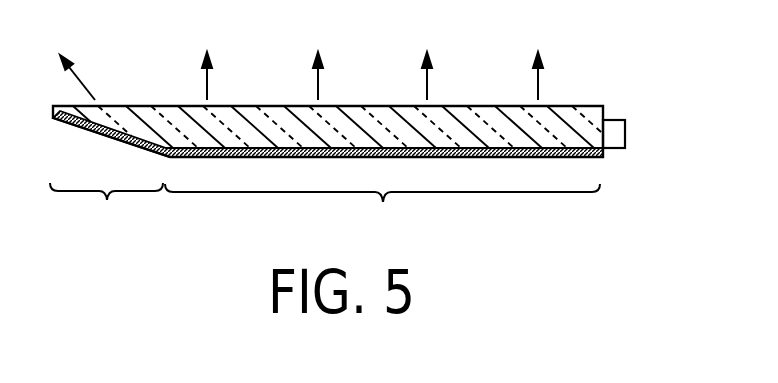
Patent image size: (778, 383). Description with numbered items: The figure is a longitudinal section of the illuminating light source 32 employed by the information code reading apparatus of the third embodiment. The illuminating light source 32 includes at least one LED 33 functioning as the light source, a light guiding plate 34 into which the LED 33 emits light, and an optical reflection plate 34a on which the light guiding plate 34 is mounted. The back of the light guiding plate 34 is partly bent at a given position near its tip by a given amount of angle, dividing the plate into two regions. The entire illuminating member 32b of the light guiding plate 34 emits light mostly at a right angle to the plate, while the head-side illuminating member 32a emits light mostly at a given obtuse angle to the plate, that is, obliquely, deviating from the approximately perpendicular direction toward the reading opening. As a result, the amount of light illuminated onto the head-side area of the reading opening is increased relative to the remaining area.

The illuminating light source 32 is at (370, 124).
The head-side illuminating member 32a is at (106, 210).
The entire illuminating member 32b is at (382, 212).
The LED 33 is at (626, 130).
The light guiding plate 34 is at (460, 112).
The optical reflection plate 34a is at (583, 158).